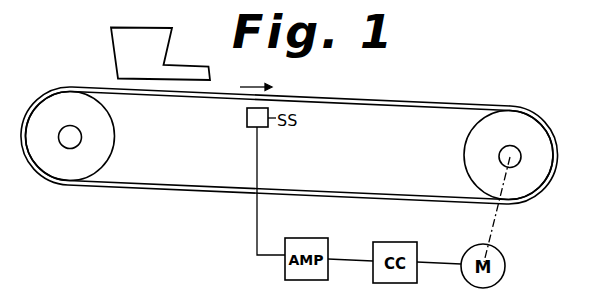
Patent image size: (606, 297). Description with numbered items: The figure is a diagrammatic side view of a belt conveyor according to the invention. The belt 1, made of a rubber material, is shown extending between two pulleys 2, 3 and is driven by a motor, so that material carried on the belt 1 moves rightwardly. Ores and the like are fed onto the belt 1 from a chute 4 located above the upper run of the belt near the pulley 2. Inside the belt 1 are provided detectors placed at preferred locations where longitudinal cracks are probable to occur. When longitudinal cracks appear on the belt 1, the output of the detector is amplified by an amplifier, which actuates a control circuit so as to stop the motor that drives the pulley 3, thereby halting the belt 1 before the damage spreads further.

The belt 1 is at (139, 187).
The pulley 2 is at (76, 173).
The pulley 3 is at (533, 186).
The chute 4 is at (163, 48).